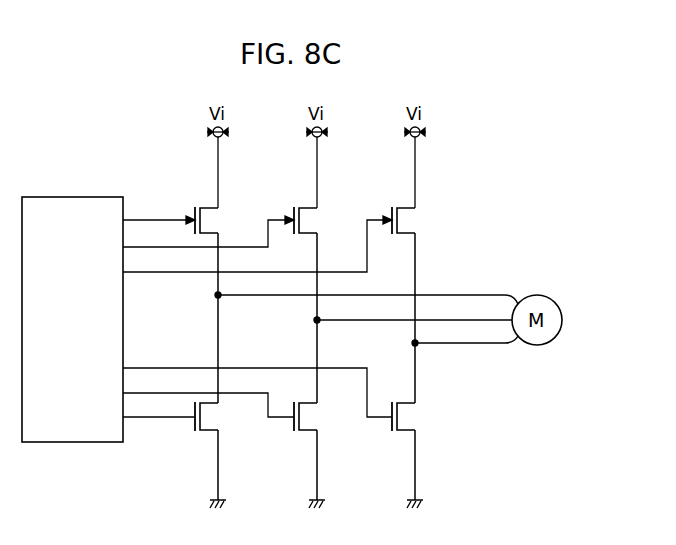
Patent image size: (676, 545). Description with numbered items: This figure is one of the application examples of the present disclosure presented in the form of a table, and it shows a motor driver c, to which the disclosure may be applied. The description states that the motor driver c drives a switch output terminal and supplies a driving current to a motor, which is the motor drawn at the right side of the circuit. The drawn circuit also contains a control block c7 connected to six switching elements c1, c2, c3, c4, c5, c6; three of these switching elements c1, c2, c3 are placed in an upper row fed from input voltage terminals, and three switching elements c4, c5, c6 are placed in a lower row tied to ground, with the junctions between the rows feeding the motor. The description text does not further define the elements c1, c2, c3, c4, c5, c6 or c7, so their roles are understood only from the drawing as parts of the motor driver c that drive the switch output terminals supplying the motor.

The motor driver c is at (512, 170).
The switch driver (SW DRV) c7 is at (73, 196).
The high-side switching transistor c1 is at (186, 220).
The high-side switching transistor c2 is at (236, 227).
The high-side switching transistor c3 is at (285, 239).
The low-side switching transistor c4 is at (186, 416).
The low-side switching transistor c5 is at (236, 412).
The low-side switching transistor c6 is at (285, 399).